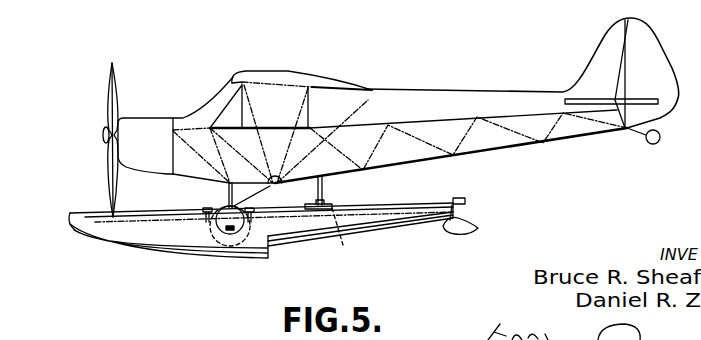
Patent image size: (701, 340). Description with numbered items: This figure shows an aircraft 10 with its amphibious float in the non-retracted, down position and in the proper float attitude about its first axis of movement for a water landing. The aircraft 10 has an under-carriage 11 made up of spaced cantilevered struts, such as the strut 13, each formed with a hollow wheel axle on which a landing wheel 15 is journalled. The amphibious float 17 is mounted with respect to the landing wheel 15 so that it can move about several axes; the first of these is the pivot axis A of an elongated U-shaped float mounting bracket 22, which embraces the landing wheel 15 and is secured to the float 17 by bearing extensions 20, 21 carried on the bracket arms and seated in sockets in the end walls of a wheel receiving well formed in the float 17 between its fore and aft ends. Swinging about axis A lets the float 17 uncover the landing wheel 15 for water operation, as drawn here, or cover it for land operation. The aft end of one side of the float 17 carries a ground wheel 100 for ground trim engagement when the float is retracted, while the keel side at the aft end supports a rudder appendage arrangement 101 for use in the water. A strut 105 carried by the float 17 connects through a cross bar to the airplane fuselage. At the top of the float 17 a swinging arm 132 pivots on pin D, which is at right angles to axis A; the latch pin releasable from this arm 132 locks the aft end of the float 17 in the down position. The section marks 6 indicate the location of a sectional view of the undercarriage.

The aircraft 10 is at (428, 97).
The under-carriage 11 is at (372, 240).
The cantilevered strut 13 is at (283, 172).
The landing wheel 15 is at (233, 208).
The amphibious float 17 is at (400, 216).
The bearing extension 20 is at (207, 212).
The bearing extension 21 is at (250, 213).
The U-shaped float mounting bracket 22 is at (242, 253).
The ground wheel 100 is at (462, 200).
The rudder appendage arrangement 101 is at (475, 228).
The strut 105 is at (325, 187).
The swinging arm 132 is at (333, 205).
The section line 6- 6 is at (213, 205).
The pivot axis A is at (83, 212).
The pivot pin D is at (343, 235).